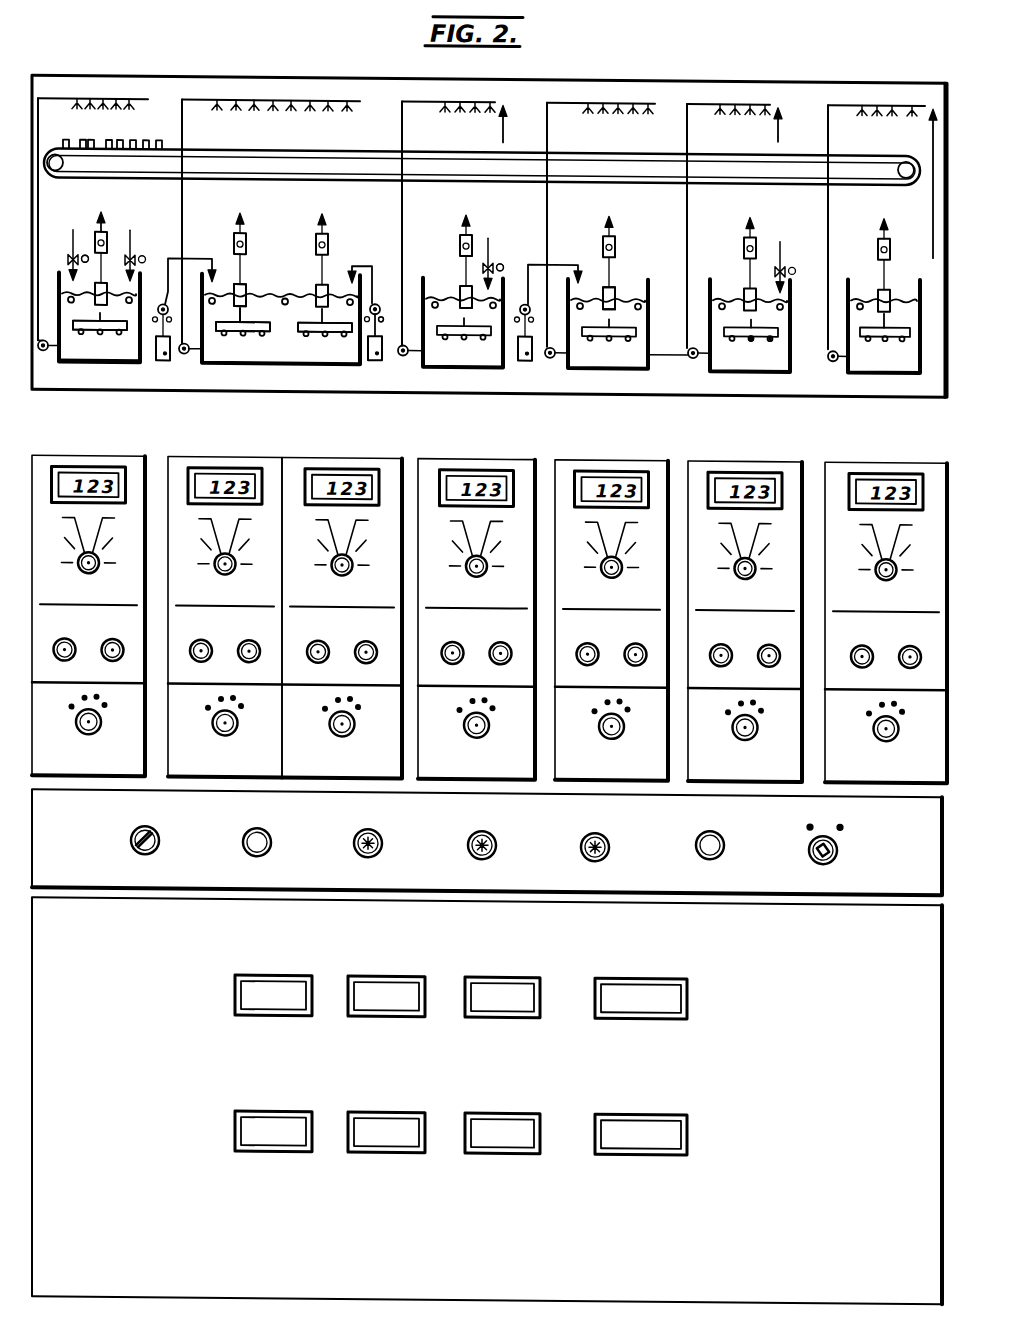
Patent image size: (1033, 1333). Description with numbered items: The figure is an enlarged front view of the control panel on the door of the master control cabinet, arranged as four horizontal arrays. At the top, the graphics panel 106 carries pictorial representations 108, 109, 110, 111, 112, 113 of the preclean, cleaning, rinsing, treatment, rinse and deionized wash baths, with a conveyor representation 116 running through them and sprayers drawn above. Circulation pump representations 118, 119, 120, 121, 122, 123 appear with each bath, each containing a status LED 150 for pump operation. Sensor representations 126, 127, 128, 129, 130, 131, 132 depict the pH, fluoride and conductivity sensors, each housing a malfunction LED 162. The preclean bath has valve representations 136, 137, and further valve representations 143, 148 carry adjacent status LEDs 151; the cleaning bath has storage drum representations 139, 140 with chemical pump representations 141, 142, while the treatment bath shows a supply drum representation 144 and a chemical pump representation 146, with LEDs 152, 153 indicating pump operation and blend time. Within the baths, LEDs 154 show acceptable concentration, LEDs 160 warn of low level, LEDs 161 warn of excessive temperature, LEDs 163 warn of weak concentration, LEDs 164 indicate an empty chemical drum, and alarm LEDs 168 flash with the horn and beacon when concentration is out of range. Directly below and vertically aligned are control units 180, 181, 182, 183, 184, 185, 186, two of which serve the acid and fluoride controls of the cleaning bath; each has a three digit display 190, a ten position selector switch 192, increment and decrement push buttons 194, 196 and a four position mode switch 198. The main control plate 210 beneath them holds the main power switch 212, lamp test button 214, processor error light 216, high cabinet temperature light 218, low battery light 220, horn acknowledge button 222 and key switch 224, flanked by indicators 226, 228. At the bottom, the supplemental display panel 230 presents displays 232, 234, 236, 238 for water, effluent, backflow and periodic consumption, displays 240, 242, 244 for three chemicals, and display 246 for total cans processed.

The upper horizontal panel 106 is at (208, 76).
The conveyor representation 116 is at (340, 157).
The preclean bath representation 108 is at (88, 362).
The cleaning bath representation 109 is at (225, 362).
The rinsing bath representation 110 is at (443, 368).
The treatment bath representation 111 is at (585, 366).
The rinse bath representation 112 is at (745, 370).
The deionized wash bath representation 113 is at (883, 370).
The pH sensor representation 126 is at (108, 240).
The pH sensor representation 127 is at (242, 235).
The fluoride sensor representation 128 is at (324, 236).
The pH sensor representation 129 is at (460, 238).
The pH sensor representation 130 is at (603, 236).
The conductivity sensor representation 131 is at (744, 236).
The conductivity sensor representation 132 is at (878, 236).
The valve representation 136 is at (71, 250).
The valve representation 137 is at (133, 260).
The valve representation 143 is at (489, 248).
The valve representation 148 is at (781, 254).
The valve status LED 151 is at (85, 254).
The chemical pump representation 146 is at (501, 261).
The sensor malfunction LED 162 is at (102, 230).
The circulation pump representation 118 is at (43, 352).
The circulation pump representation 119 is at (184, 354).
The circulation pump representation 120 is at (403, 352).
The circulation pump representation 121 is at (552, 354).
The circulation pump representation 122 is at (693, 358).
The circulation pump representation 123 is at (830, 352).
The circulation pump status LED 150 is at (692, 350).
The storage drum representation 139 is at (160, 362).
The empty chemical drum LED 164 is at (388, 368).
The supply drum representation 144 is at (514, 365).
The chemical pump representation 141 is at (183, 250).
The chemical pump operation LED 152 is at (362, 250).
The blend time LED 153 is at (400, 302).
The chemical pump representation 142 is at (381, 313).
The storage drum representation 140 is at (367, 373).
The low bath level LED 160 is at (220, 292).
The excessive bath temperature LED 161 is at (634, 294).
The weak bath concentration LED 163 is at (250, 326).
The alarm LED 168 is at (97, 362).
The acceptable concentration LED 154 is at (122, 332).
The control unit 180 is at (94, 641).
The control unit 181 is at (229, 643).
The control unit 182 is at (298, 770).
The control unit 183 is at (446, 768).
The control unit 184 is at (581, 768).
The control unit 185 is at (698, 768).
The control unit 186 is at (915, 768).
The three digit numerical display 190 is at (112, 497).
The ten position BCD selector switch 192 is at (93, 568).
The push button switch 194 is at (195, 646).
The push button switch 196 is at (246, 640).
The four position selector switch 198 is at (93, 728).
The main control plate 210 is at (686, 874).
The main power on/off switch 212 is at (157, 847).
The lamp test push button switch 214 is at (268, 847).
The processor error indicator light 216 is at (380, 848).
The high cabinet temperature indicator light 218 is at (494, 850).
The low battery indicator light 220 is at (607, 850).
The horn and beacon acknowledge push button switch 222 is at (722, 847).
The display function select key switch 224 is at (835, 850).
The indicator lamp 226 is at (809, 818).
The indicator lamp 228 is at (841, 818).
The supplemental display panel 230 is at (125, 1099).
The fresh water display 232 is at (253, 1010).
The effluent display 234 is at (366, 1010).
The backflow display 236 is at (483, 1010).
The periodic water consumption display 238 is at (612, 1010).
The first chemical consumption display 240 is at (253, 1146).
The second chemical consumption display 242 is at (366, 1146).
The third chemical consumption display 244 is at (483, 1146).
The can count display 246 is at (612, 1146).